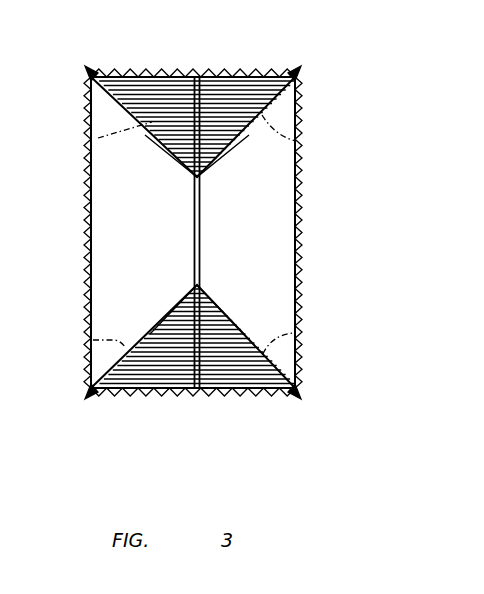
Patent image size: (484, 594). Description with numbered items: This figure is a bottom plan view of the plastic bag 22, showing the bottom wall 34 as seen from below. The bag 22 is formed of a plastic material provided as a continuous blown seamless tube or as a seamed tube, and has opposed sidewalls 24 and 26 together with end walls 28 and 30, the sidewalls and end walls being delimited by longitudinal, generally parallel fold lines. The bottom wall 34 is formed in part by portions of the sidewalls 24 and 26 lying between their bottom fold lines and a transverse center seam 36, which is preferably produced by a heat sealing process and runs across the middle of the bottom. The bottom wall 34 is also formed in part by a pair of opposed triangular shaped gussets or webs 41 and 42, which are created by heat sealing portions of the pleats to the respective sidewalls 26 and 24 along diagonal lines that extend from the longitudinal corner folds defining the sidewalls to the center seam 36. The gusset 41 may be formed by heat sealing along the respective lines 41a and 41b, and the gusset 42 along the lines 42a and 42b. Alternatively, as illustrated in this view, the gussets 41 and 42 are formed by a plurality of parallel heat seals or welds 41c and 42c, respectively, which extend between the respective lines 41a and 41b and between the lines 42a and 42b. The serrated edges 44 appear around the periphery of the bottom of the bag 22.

The plastic bag 22 is at (296, 77).
The sidewall 24 is at (302, 237).
The sidewall 26 is at (89, 258).
The end wall 28 is at (167, 395).
The end wall 30 is at (190, 70).
The bottom wall 34 is at (277, 200).
The transverse center seam 36 is at (201, 230).
The triangular gusset 41 is at (238, 90).
The heat seal line 41a is at (89, 138).
The heat seal line 41b is at (301, 140).
The parallel heat seals 41c is at (162, 108).
The triangular gusset 42 is at (235, 377).
The heat seal line 42a is at (90, 347).
The heat seal line 42b is at (300, 333).
The parallel heat seals 42c is at (165, 328).
The serrated teeth 44 is at (140, 68).